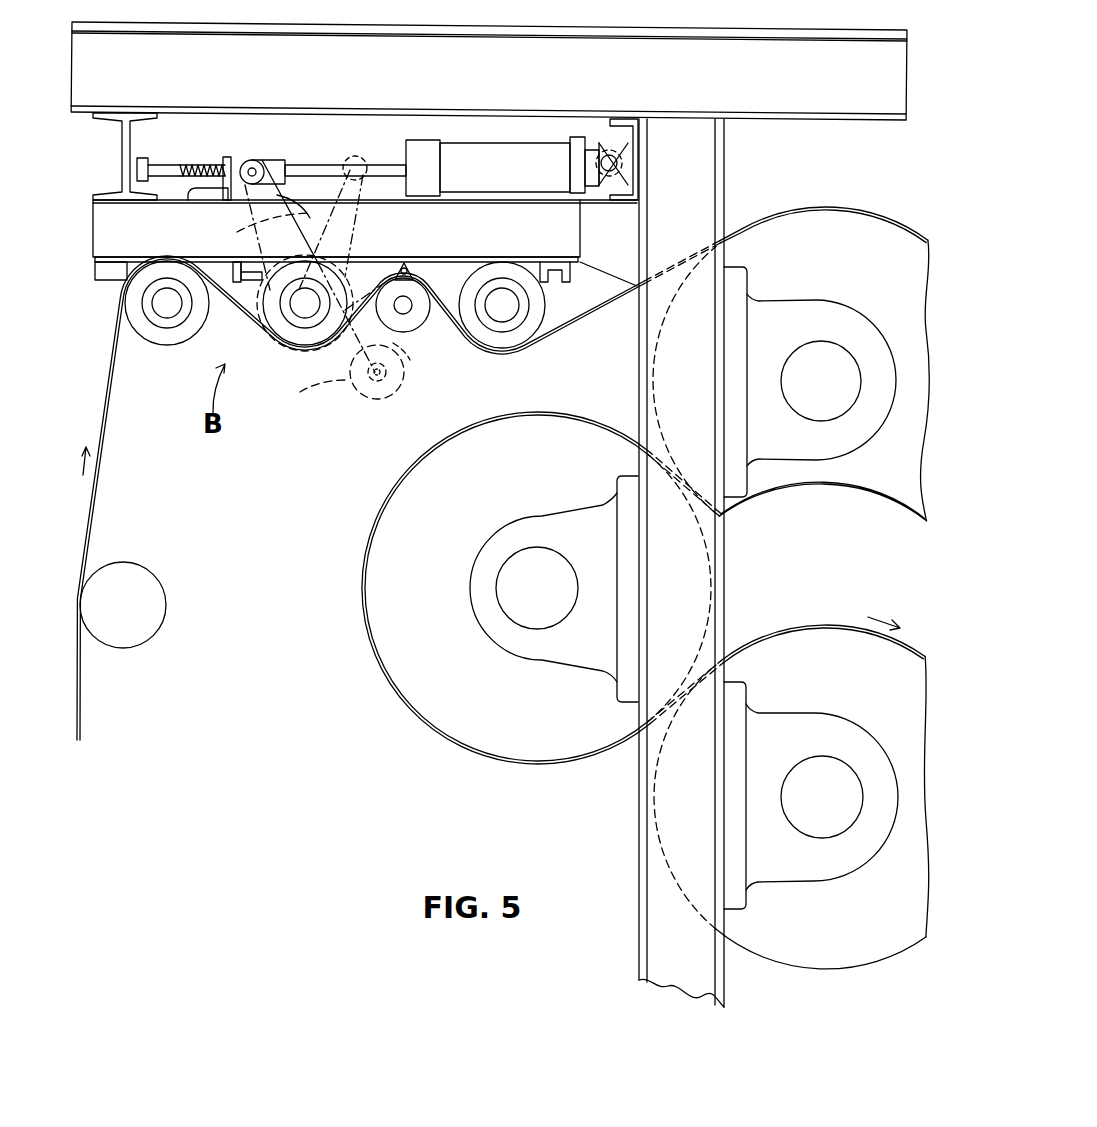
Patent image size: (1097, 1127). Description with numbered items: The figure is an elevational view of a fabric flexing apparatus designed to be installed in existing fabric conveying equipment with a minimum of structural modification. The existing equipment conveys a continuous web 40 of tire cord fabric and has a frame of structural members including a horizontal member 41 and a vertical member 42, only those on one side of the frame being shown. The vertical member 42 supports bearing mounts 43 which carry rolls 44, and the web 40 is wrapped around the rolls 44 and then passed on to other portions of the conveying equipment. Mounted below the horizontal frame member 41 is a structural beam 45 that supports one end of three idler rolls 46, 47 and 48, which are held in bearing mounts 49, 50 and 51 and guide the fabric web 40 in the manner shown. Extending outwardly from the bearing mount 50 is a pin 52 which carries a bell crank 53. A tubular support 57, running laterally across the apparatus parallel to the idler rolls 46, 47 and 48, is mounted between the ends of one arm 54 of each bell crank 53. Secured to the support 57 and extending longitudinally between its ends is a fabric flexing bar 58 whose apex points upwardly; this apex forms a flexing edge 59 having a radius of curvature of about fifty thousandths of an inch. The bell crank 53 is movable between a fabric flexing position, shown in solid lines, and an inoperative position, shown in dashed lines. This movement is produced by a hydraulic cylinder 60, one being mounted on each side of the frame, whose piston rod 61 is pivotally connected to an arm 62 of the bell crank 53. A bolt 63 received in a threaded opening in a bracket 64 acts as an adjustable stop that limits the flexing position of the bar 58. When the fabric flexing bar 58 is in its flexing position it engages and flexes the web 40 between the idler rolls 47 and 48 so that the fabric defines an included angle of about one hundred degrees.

The continuous web 40 is at (80, 720).
The horizontal member 41 is at (700, 48).
The vertical member 42 is at (722, 184).
The bearing mount 43 is at (867, 444).
The roll 44 is at (868, 237).
The structural beam 45 is at (100, 215).
The idler roll 46 is at (158, 342).
The idler roll 47 is at (273, 323).
The idler roll 48 is at (542, 323).
The bearing mount 49 is at (120, 277).
The bearing mount 50 is at (241, 284).
The bearing mount 51 is at (560, 281).
The pin 52 is at (300, 318).
The bell crank 53 is at (256, 227).
The arm 54 is at (383, 277).
The tubular support 57 is at (416, 324).
The fabric flexing bar 58 is at (412, 271).
The flexing edge 59 is at (408, 262).
The hydraulic cylinder 60 is at (505, 150).
The piston rod 61 is at (383, 165).
The arm 62 is at (292, 176).
The bolt 63 is at (173, 167).
The bracket 64 is at (226, 160).